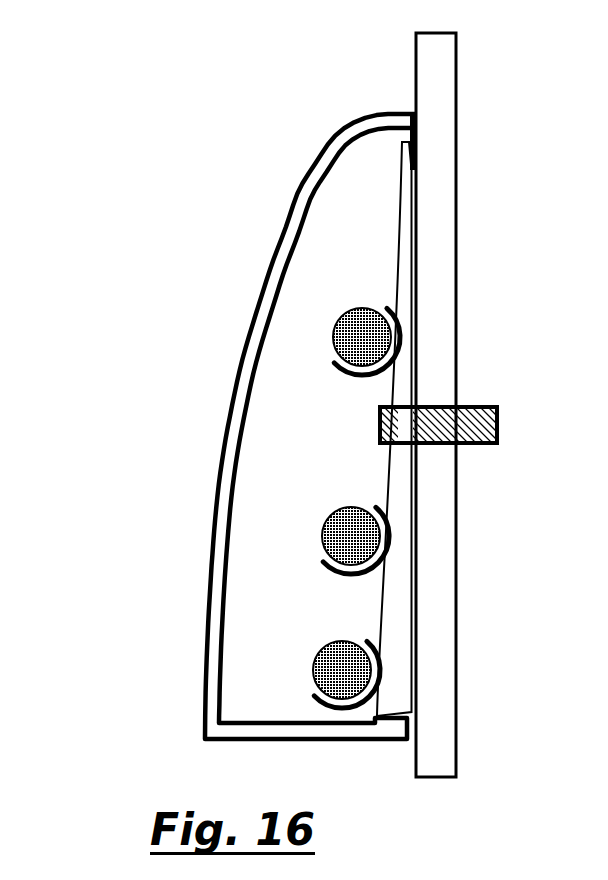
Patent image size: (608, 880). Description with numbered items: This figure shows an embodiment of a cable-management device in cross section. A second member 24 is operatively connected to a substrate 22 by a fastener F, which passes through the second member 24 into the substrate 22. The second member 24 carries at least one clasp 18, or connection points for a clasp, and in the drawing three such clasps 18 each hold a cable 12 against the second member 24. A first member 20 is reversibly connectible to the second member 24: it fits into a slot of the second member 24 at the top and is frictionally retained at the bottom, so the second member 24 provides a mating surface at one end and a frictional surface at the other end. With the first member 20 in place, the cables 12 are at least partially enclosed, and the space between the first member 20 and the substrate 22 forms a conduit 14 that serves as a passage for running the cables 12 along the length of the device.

The cable 12 is at (350, 348).
The conduit 14 is at (294, 425).
The clasp 18 is at (334, 366).
The first member 20 is at (268, 320).
The substrate 22 is at (435, 98).
The second member 24 is at (400, 677).
The fastener F is at (498, 422).